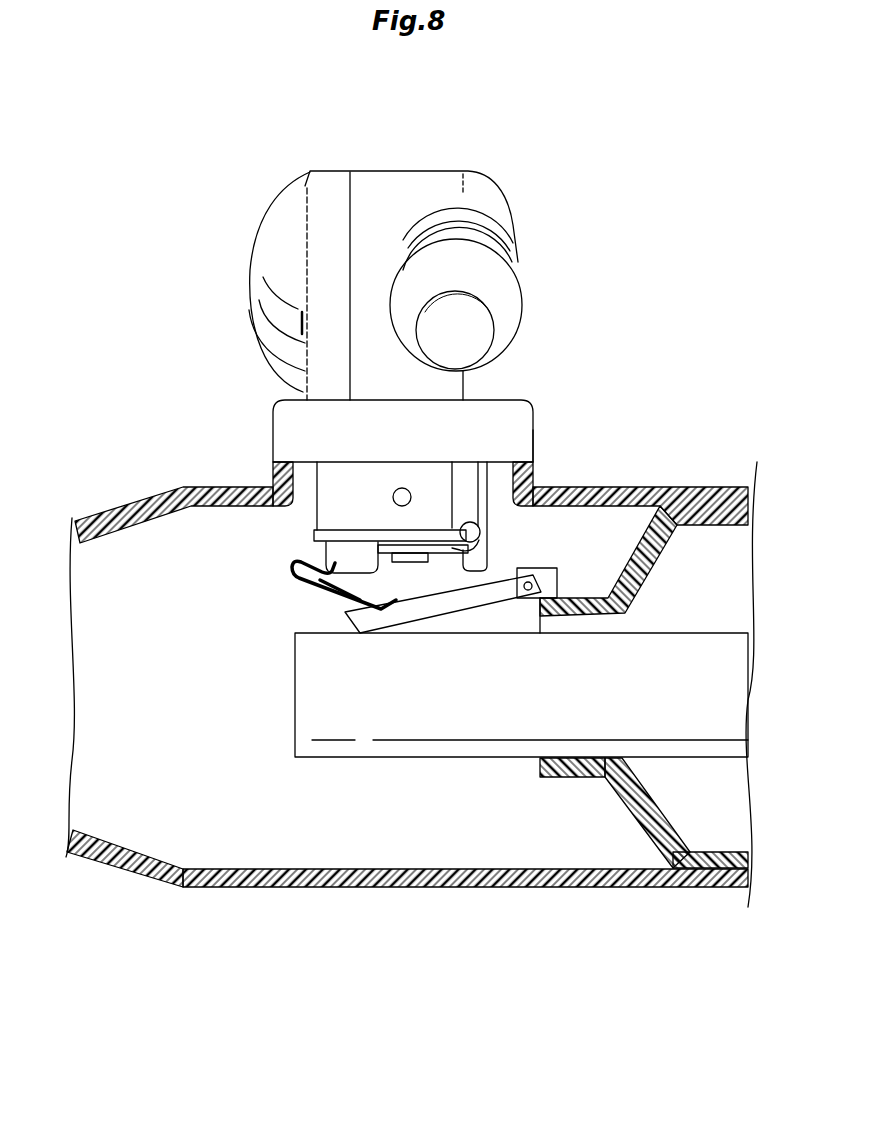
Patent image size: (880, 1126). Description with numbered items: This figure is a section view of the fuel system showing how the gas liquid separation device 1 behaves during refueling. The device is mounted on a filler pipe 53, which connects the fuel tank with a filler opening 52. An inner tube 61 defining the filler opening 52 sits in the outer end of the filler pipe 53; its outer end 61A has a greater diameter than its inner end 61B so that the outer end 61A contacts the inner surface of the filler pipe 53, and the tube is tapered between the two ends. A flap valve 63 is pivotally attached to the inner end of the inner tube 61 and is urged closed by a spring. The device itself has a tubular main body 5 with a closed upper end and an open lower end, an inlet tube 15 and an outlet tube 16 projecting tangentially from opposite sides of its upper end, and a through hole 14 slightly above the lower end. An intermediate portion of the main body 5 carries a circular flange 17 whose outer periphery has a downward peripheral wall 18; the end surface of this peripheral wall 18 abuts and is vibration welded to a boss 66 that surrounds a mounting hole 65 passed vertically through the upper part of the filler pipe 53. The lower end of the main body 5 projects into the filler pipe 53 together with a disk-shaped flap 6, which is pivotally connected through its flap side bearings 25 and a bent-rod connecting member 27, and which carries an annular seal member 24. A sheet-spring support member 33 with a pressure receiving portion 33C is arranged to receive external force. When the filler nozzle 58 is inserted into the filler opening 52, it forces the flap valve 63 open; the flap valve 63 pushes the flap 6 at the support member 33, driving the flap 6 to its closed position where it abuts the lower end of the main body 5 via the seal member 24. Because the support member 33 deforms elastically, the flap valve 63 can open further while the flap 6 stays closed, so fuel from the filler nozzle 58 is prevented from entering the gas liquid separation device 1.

The gas liquid separation device 1 is at (528, 152).
The main body 5 is at (386, 180).
The inlet tube 15 is at (283, 212).
The outlet tube 16 is at (499, 272).
The flange 17 is at (521, 416).
The peripheral wall 18 is at (522, 447).
The mounting hole 65 is at (293, 485).
The boss 66 is at (278, 472).
The through hole 14 is at (398, 489).
The seal member 24 is at (316, 532).
The flap side bearings 25 is at (482, 540).
The connecting member 27 is at (446, 552).
The flap 6 is at (296, 540).
The support member 33 is at (286, 561).
The pressure receiving portion 33C is at (330, 593).
The flap valve 63 is at (338, 623).
The filler nozzle 58 is at (408, 748).
The inner tube 61 is at (648, 826).
The outer end 61A is at (708, 852).
The inner end 61B is at (580, 772).
The filler opening 52 is at (713, 884).
The filler pipe 53 is at (122, 860).